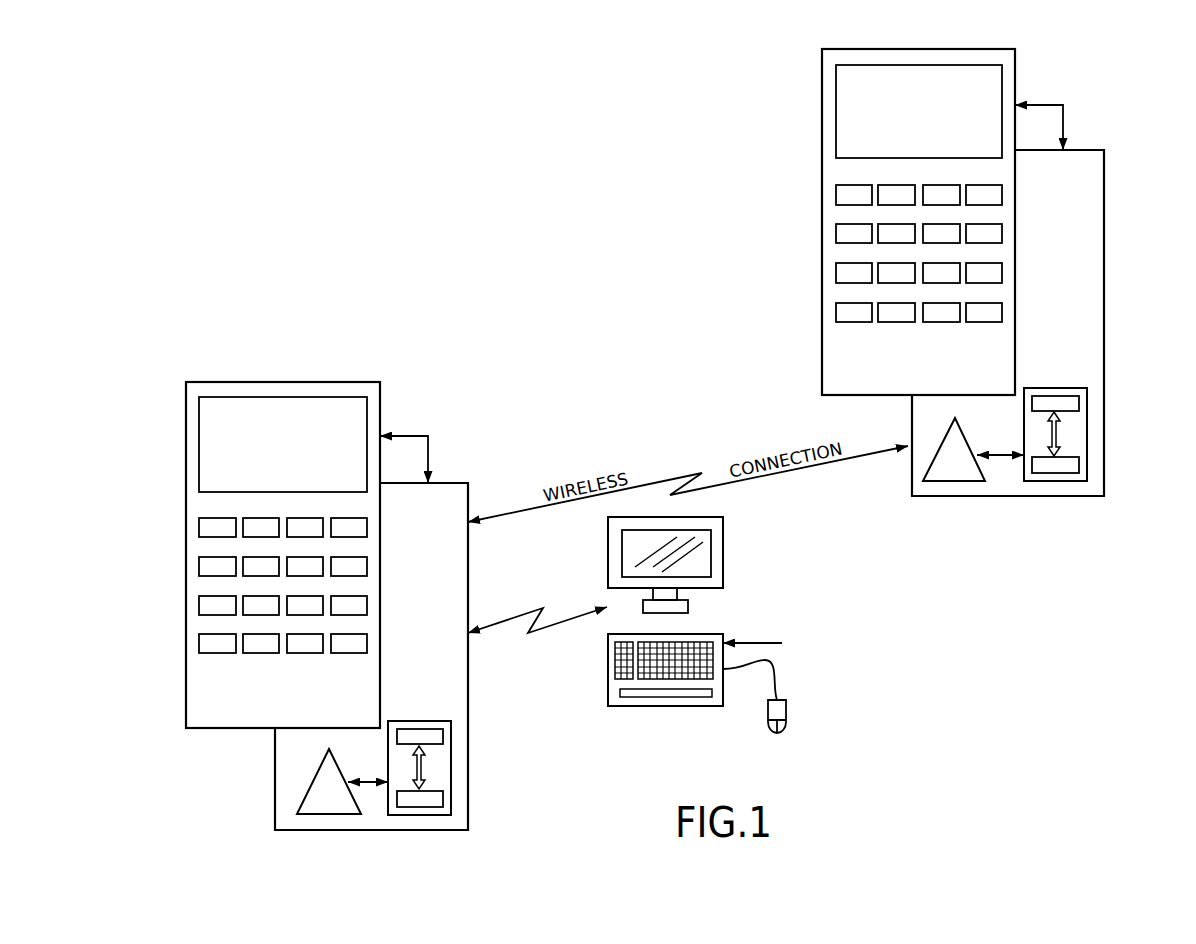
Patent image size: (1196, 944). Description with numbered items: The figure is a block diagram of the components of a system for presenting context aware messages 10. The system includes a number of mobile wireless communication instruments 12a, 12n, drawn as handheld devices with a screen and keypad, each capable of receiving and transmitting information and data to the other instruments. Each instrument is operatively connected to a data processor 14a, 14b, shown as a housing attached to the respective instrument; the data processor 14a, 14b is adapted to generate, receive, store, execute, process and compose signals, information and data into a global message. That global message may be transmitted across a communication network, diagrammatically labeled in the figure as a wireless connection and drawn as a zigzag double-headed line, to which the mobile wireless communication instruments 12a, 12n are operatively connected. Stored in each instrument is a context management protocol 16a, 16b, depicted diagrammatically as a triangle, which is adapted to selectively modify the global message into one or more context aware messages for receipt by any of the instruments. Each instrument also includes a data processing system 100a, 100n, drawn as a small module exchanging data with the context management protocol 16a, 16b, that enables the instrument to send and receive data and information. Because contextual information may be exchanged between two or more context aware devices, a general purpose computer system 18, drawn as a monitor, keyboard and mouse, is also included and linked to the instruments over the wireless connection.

The system for presenting context aware messages 10 is at (500, 143).
The mobile wireless communication instrument 12a is at (244, 382).
The mobile wireless communication instrument 12n is at (822, 120).
The data processor 14a is at (468, 675).
The data processor 14b is at (1104, 332).
The context management protocol 16a is at (328, 805).
The context management protocol 16b is at (952, 472).
The general purpose computer system 18 is at (793, 507).
The data processing system 100a is at (451, 735).
The data processing system 100n is at (1087, 420).